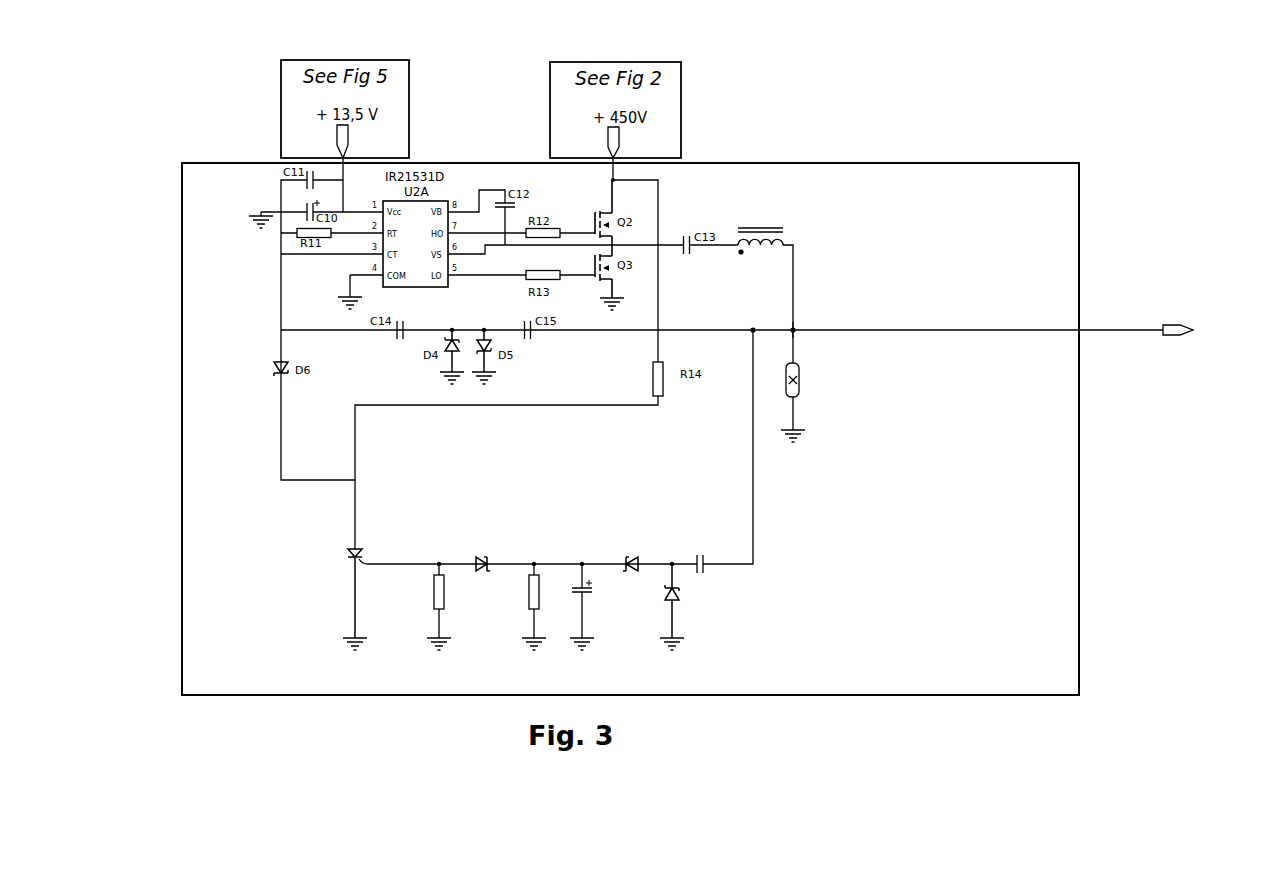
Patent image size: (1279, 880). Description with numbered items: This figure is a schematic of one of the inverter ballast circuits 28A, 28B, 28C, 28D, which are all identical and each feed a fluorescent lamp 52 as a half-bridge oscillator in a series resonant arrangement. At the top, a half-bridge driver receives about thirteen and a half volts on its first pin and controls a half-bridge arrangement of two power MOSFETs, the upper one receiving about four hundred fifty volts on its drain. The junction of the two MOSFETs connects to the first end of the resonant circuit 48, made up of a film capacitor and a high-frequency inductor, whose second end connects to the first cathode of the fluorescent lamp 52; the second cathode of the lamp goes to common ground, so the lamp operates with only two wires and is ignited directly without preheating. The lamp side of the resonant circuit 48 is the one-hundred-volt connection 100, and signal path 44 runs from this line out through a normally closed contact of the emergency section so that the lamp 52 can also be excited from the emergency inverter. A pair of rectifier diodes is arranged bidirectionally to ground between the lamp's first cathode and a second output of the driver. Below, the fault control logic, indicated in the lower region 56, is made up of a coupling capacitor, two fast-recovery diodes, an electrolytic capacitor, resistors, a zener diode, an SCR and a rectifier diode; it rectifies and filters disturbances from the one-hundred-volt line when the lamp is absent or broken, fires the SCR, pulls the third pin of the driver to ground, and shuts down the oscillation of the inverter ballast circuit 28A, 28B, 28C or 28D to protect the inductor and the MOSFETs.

The inverter ballast circuit 28A is at (630, 359).
The inverter ballast circuit 28B is at (630, 359).
The inverter ballast circuit 28C is at (630, 359).
The inverter ballast circuit 28D is at (630, 359).
The signal path 44 is at (758, 317).
The resonant circuit 48 is at (765, 271).
The fluorescent lamp 52 is at (910, 386).
The lamp starter / ignition circuit 56 is at (548, 490).
The 100V connection 100 is at (805, 325).